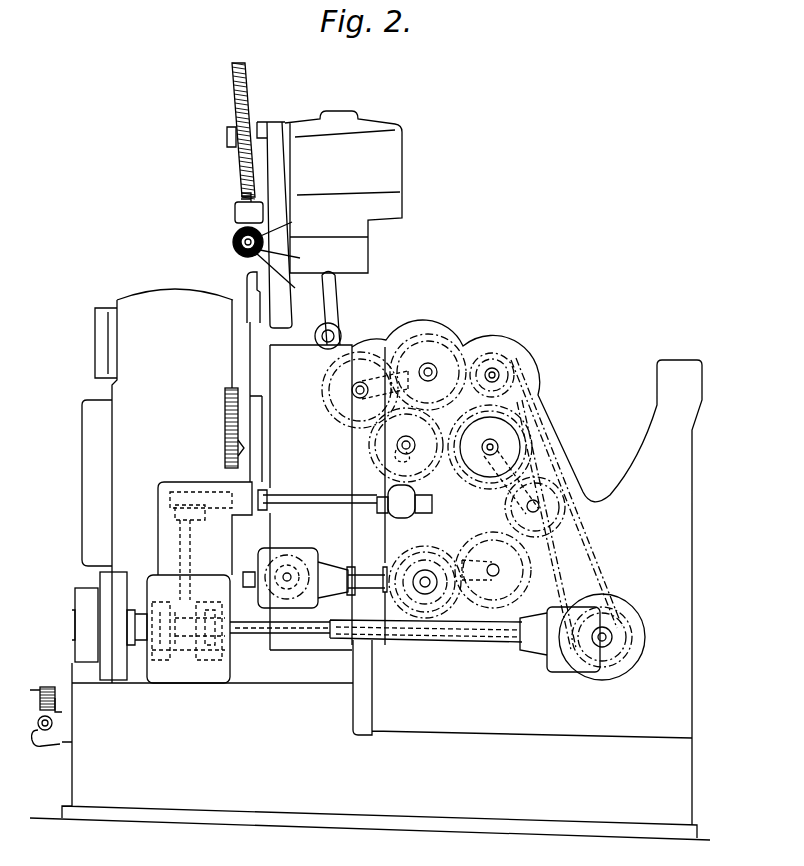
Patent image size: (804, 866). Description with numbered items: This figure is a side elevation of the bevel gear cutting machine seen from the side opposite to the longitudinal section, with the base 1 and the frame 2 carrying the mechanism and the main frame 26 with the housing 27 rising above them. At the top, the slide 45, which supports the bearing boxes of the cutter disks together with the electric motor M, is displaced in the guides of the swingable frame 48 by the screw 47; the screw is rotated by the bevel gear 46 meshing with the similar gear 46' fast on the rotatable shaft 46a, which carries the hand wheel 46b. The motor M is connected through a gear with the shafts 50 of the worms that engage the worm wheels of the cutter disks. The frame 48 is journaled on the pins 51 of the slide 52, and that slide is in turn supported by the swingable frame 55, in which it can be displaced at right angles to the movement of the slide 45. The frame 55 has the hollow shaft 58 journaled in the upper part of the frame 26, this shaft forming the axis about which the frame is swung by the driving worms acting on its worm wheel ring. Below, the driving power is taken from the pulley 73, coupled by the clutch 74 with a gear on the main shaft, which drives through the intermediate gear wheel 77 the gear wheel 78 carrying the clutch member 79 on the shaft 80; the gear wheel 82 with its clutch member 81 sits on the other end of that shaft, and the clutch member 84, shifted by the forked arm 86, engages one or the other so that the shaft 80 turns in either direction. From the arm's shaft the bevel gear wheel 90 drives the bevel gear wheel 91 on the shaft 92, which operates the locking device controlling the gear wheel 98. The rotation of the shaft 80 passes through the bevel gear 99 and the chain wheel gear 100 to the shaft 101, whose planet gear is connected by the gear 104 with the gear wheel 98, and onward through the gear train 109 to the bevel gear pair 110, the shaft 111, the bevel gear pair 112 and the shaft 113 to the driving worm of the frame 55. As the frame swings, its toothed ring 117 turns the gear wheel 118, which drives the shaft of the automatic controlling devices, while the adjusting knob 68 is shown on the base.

The base 1 is at (370, 751).
The frame 2 is at (527, 572).
The frame 26 is at (155, 292).
The gear housing 27 is at (378, 340).
The slide 45 is at (278, 124).
The bevel gear 46 is at (234, 242).
The bevel gear 46' is at (284, 224).
The rotatable shaft 46a is at (293, 257).
The hand wheel 46b is at (289, 277).
The screw 47 is at (234, 91).
The swingable frame 48 is at (235, 212).
The shafts of the worms 50 is at (340, 297).
The pins 51 is at (335, 333).
The slide 52 is at (258, 300).
The swingable frame 55 is at (238, 322).
The hollow pin or shaft 58 is at (95, 320).
The adjusting knob 68 is at (46, 686).
The pulley 73 is at (82, 598).
The clutch 74 is at (132, 638).
The intermediate gear wheel 77 is at (162, 680).
The gear wheel 78 is at (168, 592).
The clutch member 79 is at (176, 682).
The shaft 80 is at (285, 634).
The clutch member 81 is at (208, 648).
The gear wheel 82 is at (228, 660).
The clutch member 84 is at (180, 578).
The arm 86 is at (208, 610).
The bevel gear wheel 90 is at (175, 512).
The bevel gear wheel 91 is at (195, 486).
The shaft 92 is at (312, 496).
The gear wheel 98 is at (375, 449).
The bevel gear 99 is at (562, 667).
The chain wheel gear 100 is at (590, 546).
The shaft 101 is at (498, 372).
The gear 104 is at (325, 402).
The gear train 109 is at (437, 558).
The bevel gear pair 110 is at (426, 644).
The shaft 111 is at (366, 574).
The bevel gear pair 112 is at (320, 558).
The shaft 113 is at (290, 548).
The toothed ring 117 is at (225, 406).
The gear wheel 118 is at (238, 450).
The electric motor M is at (405, 152).